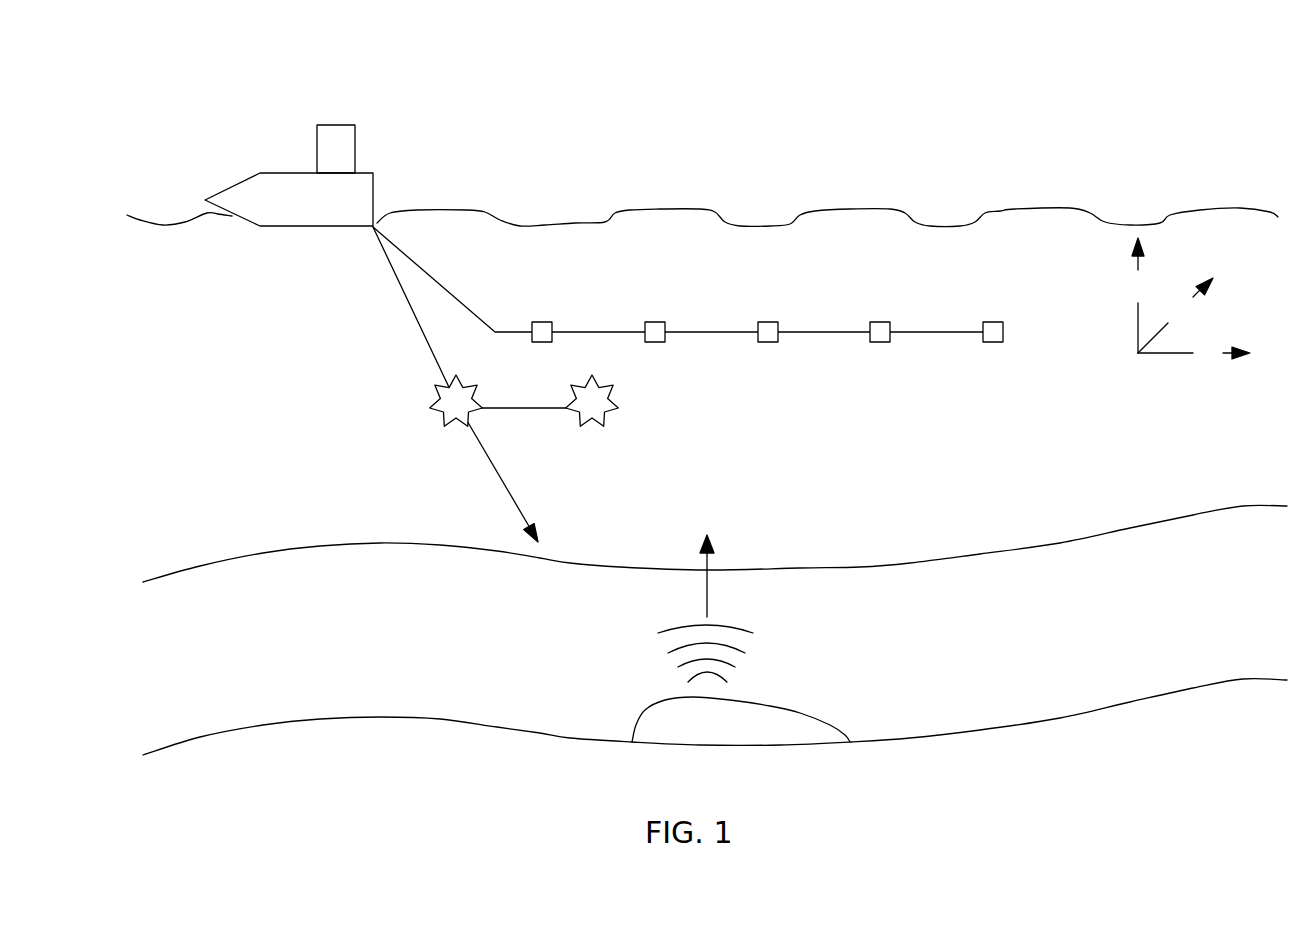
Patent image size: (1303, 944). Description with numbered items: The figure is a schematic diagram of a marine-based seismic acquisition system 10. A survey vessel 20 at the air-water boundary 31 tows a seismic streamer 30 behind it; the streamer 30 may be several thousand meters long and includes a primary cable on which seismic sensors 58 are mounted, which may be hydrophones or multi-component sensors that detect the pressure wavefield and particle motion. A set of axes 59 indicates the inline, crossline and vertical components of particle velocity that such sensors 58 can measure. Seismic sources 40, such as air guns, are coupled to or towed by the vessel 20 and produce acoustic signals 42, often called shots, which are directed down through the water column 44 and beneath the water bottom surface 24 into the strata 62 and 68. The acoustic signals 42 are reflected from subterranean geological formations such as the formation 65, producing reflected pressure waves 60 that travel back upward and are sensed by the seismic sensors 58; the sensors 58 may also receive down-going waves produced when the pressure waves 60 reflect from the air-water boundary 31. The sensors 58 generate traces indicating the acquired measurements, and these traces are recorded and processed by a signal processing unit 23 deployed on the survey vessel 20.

The marine-based seismic acquisition system 10 is at (181, 123).
The survey vessel 20 is at (368, 172).
The signal processing unit 23 is at (332, 125).
The water bottom surface 24 is at (908, 563).
The seismic streamer 30 is at (452, 290).
The air-water boundary 31 is at (1015, 210).
The seismic source 40 is at (482, 405).
The acoustic signal 42 is at (510, 502).
The water column 44 is at (307, 383).
The seismic sensor 58 is at (546, 323).
The axes 59 is at (1135, 388).
The pressure waves 60 is at (643, 665).
The strata 62 is at (287, 636).
The formation 65 is at (722, 732).
The strata 68 is at (334, 771).